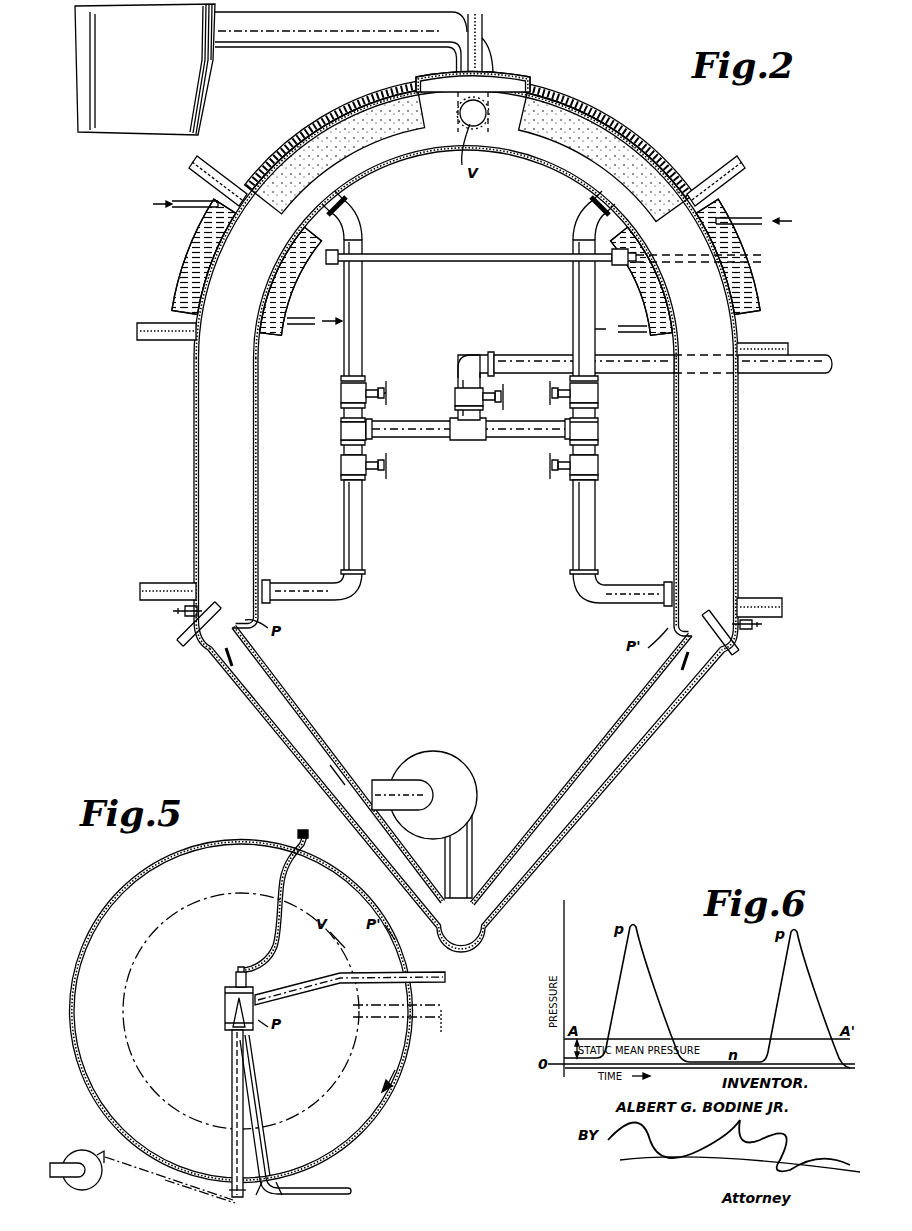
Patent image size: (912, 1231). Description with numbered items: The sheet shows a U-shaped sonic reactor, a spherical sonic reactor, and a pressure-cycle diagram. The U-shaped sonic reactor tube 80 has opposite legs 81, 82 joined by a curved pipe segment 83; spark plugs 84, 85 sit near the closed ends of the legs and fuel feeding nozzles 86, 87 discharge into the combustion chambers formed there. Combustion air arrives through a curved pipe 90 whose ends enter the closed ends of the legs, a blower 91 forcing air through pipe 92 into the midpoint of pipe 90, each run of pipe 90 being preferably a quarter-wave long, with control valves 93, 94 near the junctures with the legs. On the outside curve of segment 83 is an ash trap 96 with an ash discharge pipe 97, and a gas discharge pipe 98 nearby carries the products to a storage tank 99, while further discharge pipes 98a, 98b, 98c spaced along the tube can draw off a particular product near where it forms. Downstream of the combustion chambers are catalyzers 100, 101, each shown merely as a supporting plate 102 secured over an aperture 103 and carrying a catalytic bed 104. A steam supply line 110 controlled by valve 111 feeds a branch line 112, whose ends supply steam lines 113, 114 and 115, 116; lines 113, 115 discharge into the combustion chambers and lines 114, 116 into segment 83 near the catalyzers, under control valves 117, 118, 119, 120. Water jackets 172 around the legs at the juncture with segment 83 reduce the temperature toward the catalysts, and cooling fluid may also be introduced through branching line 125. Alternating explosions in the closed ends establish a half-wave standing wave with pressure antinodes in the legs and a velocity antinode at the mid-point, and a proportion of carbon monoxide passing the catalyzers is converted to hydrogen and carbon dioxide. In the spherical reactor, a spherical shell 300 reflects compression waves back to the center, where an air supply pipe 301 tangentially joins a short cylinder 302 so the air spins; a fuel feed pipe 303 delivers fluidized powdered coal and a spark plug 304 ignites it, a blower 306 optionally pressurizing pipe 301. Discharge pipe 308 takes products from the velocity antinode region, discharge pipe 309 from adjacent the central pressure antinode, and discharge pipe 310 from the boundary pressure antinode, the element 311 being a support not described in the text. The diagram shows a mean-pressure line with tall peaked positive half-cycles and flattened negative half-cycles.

In FIG. 2, the U-shaped sonic reactor tube 80 is at (194, 494).
In FIG. 2, the leg 81 is at (194, 538).
In FIG. 2, the leg 82 is at (738, 466).
In FIG. 2, the curved pipe segment 83 is at (560, 104).
In FIG. 2, the spark plug 84 is at (178, 616).
In FIG. 2, the spark plug 85 is at (752, 628).
In FIG. 2, the fuel feeding nozzle 86 is at (221, 612).
In FIG. 2, the fuel feeding nozzle 87 is at (723, 602).
In FIG. 2, the curved pipe 90 is at (336, 790).
In FIG. 2, the blower 91 is at (456, 785).
In FIG. 2, the pipe 92 is at (475, 856).
In FIG. 2, the control valve 93 is at (240, 660).
In FIG. 2, the control valve 94 is at (702, 676).
In FIG. 2, the ash trap 96 is at (530, 82).
In FIG. 2, the ash discharge pipe 97 is at (484, 44).
In FIG. 2, the gas discharge pipe 98 is at (323, 42).
In FIG. 2, the discharge pipe 98a is at (155, 588).
In FIG. 2, the discharge pipe 98b is at (158, 342).
In FIG. 2, the discharge pipe 98c is at (211, 170).
In FIG. 2, the storage tank 99 is at (205, 86).
In FIG. 2, the catalyzer 100 is at (336, 114).
In FIG. 2, the catalyzer 101 is at (603, 101).
In FIG. 2, the supporting plate 102 is at (284, 150).
In FIG. 2, the aperture 103 is at (292, 197).
In FIG. 2, the catalytic bed 104 is at (362, 98).
In FIG. 2, the steam supply line 110 is at (766, 372).
In FIG. 2, the valve 111 is at (462, 400).
In FIG. 2, the branch line 112 is at (443, 437).
In FIG. 2, the steam line 113 is at (359, 538).
In FIG. 2, the steam line 114 is at (363, 312).
In FIG. 2, the steam line 115 is at (579, 542).
In FIG. 2, the steam line 116 is at (573, 312).
In FIG. 2, the control valve 117 is at (356, 468).
In FIG. 2, the control valve 118 is at (593, 462).
In FIG. 2, the control valve 119 is at (356, 395).
In FIG. 2, the control valve 120 is at (593, 392).
In FIG. 2, the branching line 125 is at (759, 268).
In FIG. 2, the water jacket 172 is at (186, 280).
In FIG. 5, the spherical shell 300 is at (369, 1128).
In FIG. 5, the air supply pipe 301 is at (232, 1100).
In FIG. 5, the short cylinder 302 is at (222, 985).
In FIG. 5, the fuel feed pipe 303 is at (254, 1092).
In FIG. 5, the spark plug 304 is at (248, 984).
In FIG. 5, the blower 306 is at (89, 1178).
In FIG. 5, the discharge pipe 308 is at (441, 1036).
In FIG. 5, the discharge pipe 309 is at (446, 983).
In FIG. 5, the discharge pipe 310 is at (171, 1165).
In FIG. 5, the support 311 is at (271, 1168).